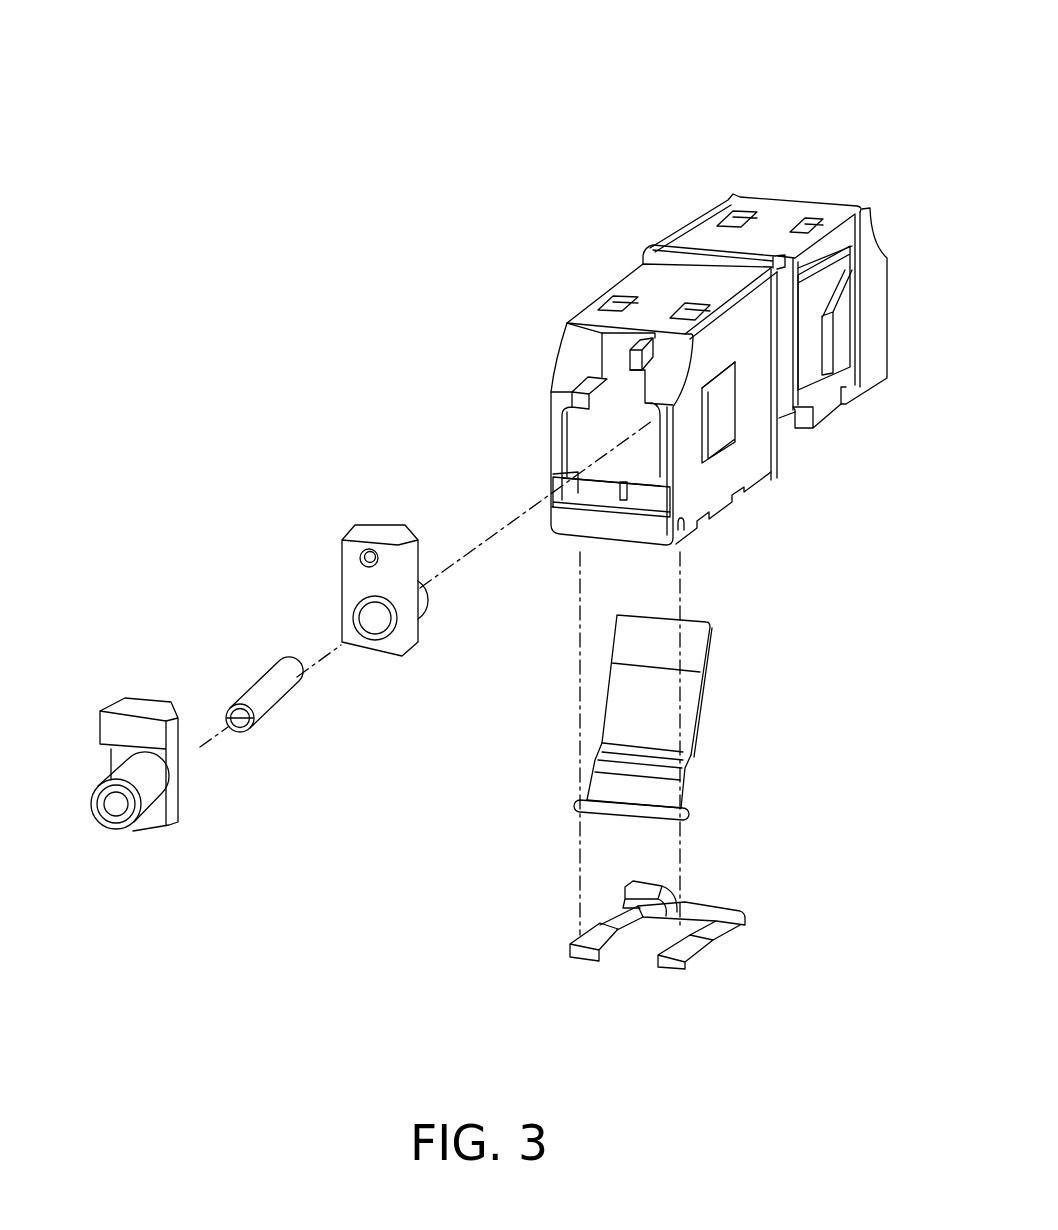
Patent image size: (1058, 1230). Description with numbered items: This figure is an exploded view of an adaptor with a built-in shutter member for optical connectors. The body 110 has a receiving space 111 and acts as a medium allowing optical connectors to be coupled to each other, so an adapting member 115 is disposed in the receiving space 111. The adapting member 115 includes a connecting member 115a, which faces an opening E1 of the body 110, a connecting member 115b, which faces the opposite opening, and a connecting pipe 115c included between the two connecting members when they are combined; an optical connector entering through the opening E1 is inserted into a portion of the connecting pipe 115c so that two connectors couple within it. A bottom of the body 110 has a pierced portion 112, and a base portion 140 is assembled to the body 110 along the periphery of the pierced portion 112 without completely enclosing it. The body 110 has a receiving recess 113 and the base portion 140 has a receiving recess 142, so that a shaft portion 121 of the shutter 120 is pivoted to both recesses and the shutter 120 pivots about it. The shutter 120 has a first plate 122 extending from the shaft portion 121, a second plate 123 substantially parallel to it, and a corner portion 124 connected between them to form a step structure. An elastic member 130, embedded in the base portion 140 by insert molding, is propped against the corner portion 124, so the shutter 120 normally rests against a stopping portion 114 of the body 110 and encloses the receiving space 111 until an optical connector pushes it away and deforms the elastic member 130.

The body 110 is at (897, 2).
The receiving space 111 is at (443, 440).
The pierced portion 112 is at (818, 210).
The receiving recess 113 is at (792, 600).
The stopping portion 114 is at (457, 360).
The adapting member 115 is at (66, 590).
The connecting member 115a is at (122, 700).
The connecting member 115b is at (356, 522).
The connecting pipe 115c is at (250, 692).
The opening E1 is at (584, 458).
The shutter 120 is at (756, 664).
The shaft portion 121 is at (603, 808).
The first plate 122 is at (612, 785).
The second plate 123 is at (623, 693).
The corner portion 124 is at (649, 751).
The elastic member 130 is at (642, 883).
The base portion 140 is at (700, 950).
The receiving recess 142 is at (660, 945).